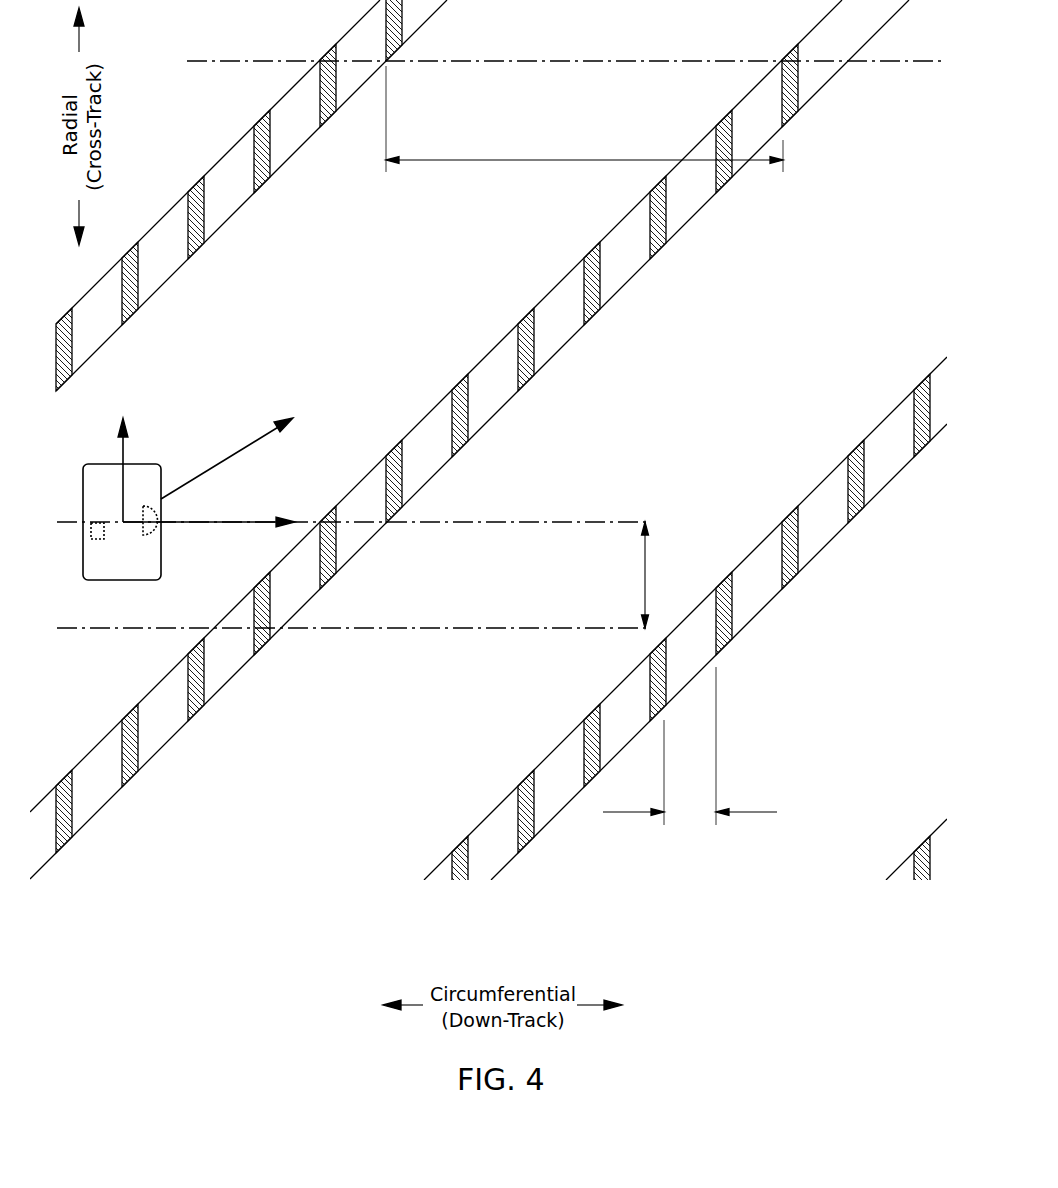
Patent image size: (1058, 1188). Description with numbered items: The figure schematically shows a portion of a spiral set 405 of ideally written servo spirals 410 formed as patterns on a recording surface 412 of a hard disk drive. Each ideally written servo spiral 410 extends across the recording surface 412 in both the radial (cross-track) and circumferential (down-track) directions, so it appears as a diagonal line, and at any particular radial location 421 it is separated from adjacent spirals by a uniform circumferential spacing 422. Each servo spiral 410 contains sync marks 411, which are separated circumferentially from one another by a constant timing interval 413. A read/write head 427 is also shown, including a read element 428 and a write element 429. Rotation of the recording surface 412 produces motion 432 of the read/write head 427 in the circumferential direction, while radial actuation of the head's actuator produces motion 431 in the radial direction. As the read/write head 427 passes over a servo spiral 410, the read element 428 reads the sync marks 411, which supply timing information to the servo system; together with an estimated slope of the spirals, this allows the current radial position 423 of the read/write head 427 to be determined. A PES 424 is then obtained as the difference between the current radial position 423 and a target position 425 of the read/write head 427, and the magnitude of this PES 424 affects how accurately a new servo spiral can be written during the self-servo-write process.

The spiral set 405 is at (760, 968).
The ideally written servo spiral 410 is at (230, 217).
The sync mark 411 is at (601, 282).
The recording surface 412 is at (590, 500).
The constant timing interval 413 is at (753, 810).
The radial location 421 is at (283, 60).
The uniform circumferential spacing 422 is at (525, 160).
The current radial position 423 is at (548, 522).
The PES 424 is at (645, 568).
The target position 425 is at (490, 628).
The read/write head 427 is at (172, 452).
The read element 428 is at (90, 527).
The write element 429 is at (145, 537).
The motion in the radial direction 431 is at (123, 450).
The motion in the circumferential direction 432 is at (235, 522).